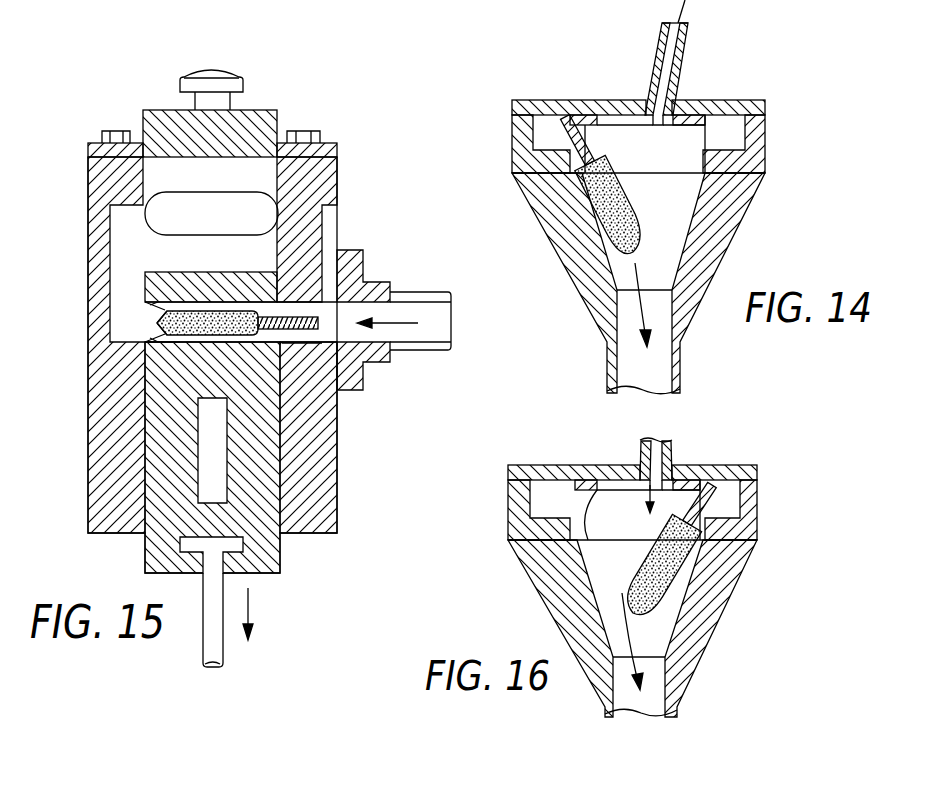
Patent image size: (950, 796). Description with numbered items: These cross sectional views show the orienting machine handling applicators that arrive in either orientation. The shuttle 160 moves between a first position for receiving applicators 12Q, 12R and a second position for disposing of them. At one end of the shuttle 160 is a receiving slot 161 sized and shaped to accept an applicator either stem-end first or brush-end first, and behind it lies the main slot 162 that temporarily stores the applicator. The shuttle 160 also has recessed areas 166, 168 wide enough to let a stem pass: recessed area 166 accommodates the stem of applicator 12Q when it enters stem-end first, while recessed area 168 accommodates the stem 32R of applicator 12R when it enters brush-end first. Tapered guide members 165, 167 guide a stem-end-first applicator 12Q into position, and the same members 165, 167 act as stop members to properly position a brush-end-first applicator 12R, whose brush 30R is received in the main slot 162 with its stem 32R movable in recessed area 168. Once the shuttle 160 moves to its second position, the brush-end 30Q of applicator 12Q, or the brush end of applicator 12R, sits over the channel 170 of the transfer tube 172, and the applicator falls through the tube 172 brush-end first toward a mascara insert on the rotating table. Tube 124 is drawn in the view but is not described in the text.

In FIG. 15, the applicator 12R is at (180, 358).
In FIG. 16, the applicator 12R is at (727, 614).
In FIG. 14, the applicator 12Q is at (724, 256).
In FIG. 15, the brush 30R is at (165, 310).
In FIG. 16, the brush 30R is at (645, 530).
In FIG. 14, the brush-end 30Q is at (586, 207).
In FIG. 15, the stem 32R is at (272, 343).
In FIG. 15, the inlet tube 124 is at (430, 346).
In FIG. 15, the shuttle 160 is at (280, 553).
In FIG. 15, the receiving slot 161 is at (280, 343).
In FIG. 15, the main slot 162 is at (330, 290).
In FIG. 15, the tapered guide member 165 is at (157, 322).
In FIG. 15, the recessed area 166 is at (118, 251).
In FIG. 15, the tapered guide member 167 is at (170, 346).
In FIG. 15, the recessed area 168 is at (322, 250).
In FIG. 15, the channel 170 is at (300, 212).
In FIG. 14, the channel 170 is at (690, 215).
In FIG. 16, the channel 170 is at (594, 565).
In FIG. 14, the transfer tube 172 is at (672, 314).
In FIG. 16, the transfer tube 172 is at (670, 675).